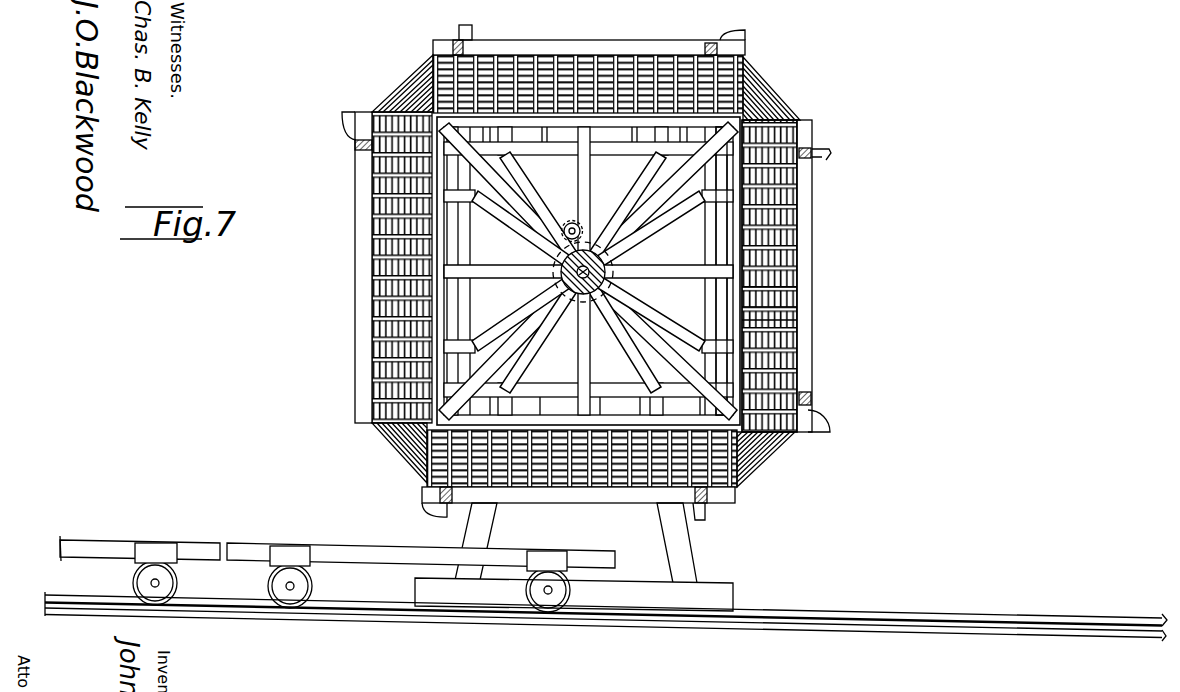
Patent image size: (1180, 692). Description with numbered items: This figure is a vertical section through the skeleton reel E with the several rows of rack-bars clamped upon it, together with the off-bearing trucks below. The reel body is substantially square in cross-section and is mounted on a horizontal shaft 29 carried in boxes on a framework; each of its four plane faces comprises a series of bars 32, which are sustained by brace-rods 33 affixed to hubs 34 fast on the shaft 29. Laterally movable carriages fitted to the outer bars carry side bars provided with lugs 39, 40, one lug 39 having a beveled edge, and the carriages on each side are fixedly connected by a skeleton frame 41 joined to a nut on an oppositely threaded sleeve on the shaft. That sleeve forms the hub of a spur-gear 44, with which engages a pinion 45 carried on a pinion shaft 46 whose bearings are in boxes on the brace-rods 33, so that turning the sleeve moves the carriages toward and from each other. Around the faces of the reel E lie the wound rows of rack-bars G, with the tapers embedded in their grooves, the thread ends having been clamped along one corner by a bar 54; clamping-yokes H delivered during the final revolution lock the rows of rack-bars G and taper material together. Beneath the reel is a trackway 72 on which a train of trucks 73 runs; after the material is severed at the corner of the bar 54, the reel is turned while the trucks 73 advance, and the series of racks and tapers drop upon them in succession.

The trackway 72 is at (840, 617).
The trucks 73 is at (113, 540).
The bar 54 is at (415, 95).
The lug 39 is at (829, 150).
The lug 40 is at (824, 419).
The pinion 45 is at (569, 222).
The vertical post 46 is at (586, 230).
The spur-gear 44 is at (622, 265).
The horizontal shaft 29 is at (623, 283).
The bars 32 is at (735, 304).
The hubs 34 is at (577, 311).
The brace-rods 33 is at (588, 354).
The skeleton frame 41 is at (562, 369).
The skeleton reel E is at (797, 270).
The rack-bars G is at (795, 289).
The clamping-yokes H is at (795, 320).